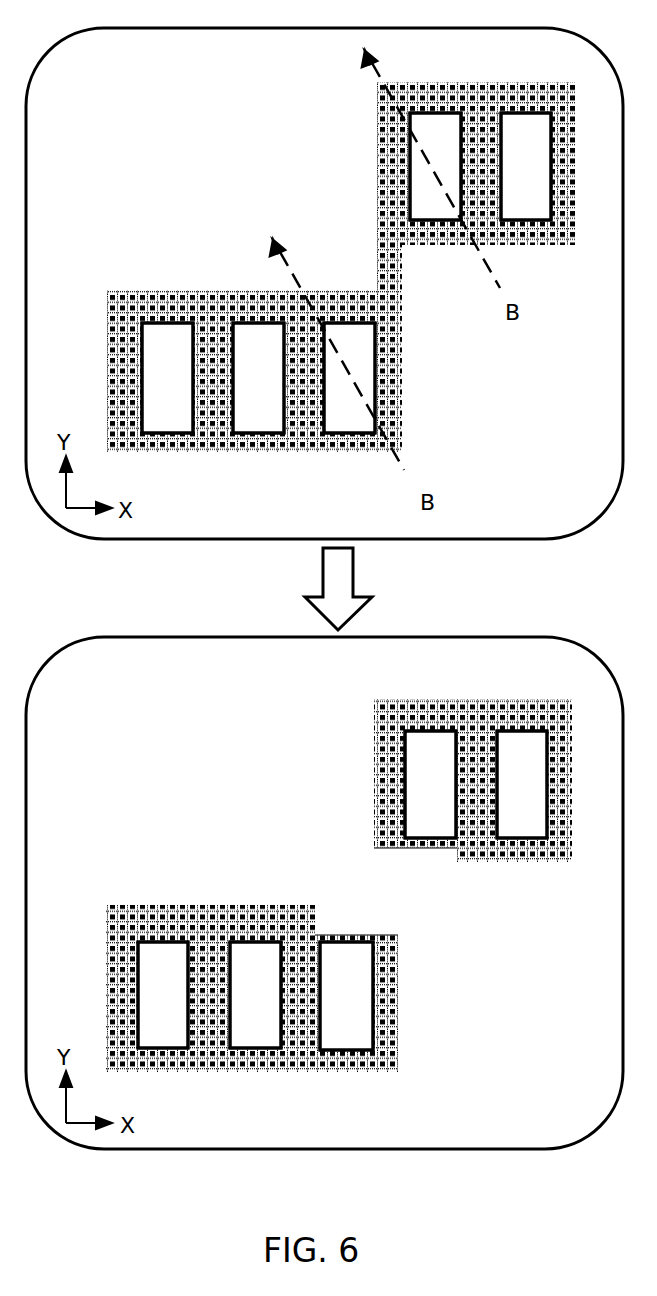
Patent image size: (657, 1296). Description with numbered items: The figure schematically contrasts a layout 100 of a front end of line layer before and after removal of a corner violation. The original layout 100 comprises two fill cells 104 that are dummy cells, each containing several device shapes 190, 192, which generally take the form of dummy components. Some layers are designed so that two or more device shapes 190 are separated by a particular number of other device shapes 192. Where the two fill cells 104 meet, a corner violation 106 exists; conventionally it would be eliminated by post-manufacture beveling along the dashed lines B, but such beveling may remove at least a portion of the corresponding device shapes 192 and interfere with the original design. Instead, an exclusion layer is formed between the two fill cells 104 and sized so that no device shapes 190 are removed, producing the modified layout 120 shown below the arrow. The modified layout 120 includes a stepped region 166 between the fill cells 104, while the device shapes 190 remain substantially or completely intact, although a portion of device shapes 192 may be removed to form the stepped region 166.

The layout 100 is at (115, 80).
The modified layout 120 is at (115, 703).
The fill cell 104 is at (125, 310).
The corner violation 106 is at (390, 268).
The device shape 190 is at (167, 363).
The device shape 192 is at (253, 400).
The stepped region 166 is at (437, 849).